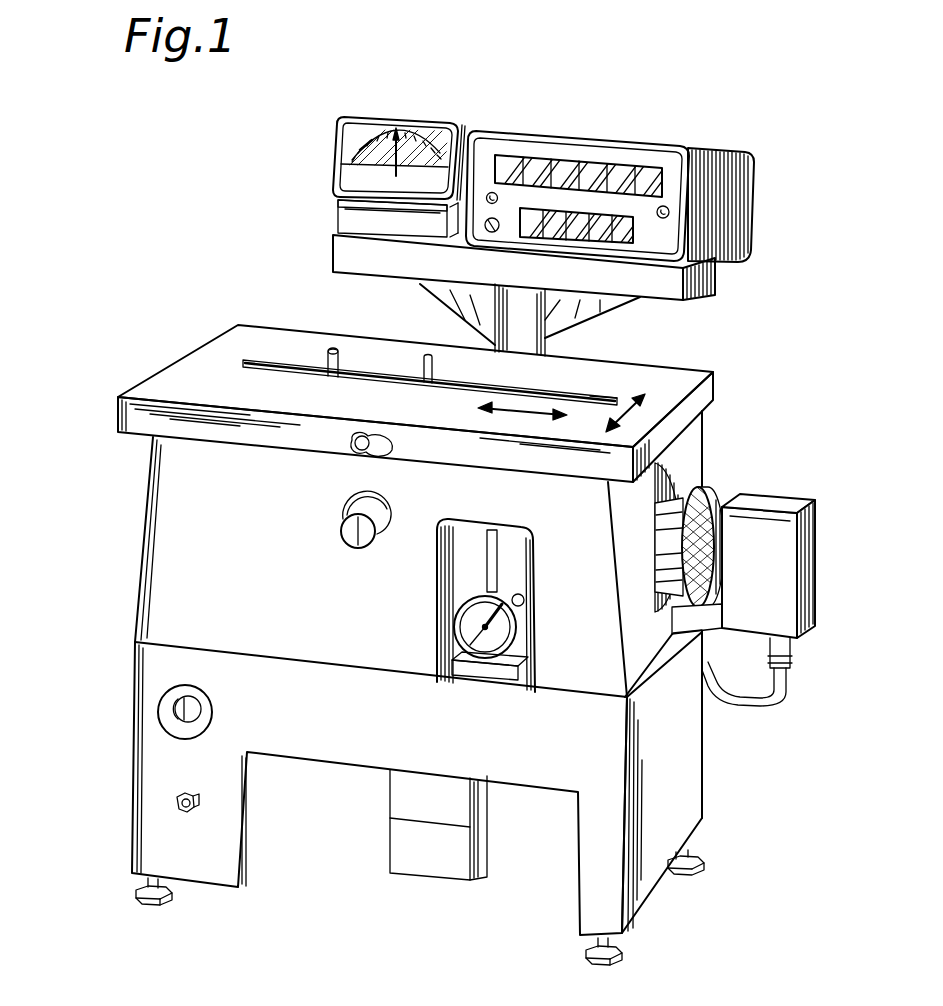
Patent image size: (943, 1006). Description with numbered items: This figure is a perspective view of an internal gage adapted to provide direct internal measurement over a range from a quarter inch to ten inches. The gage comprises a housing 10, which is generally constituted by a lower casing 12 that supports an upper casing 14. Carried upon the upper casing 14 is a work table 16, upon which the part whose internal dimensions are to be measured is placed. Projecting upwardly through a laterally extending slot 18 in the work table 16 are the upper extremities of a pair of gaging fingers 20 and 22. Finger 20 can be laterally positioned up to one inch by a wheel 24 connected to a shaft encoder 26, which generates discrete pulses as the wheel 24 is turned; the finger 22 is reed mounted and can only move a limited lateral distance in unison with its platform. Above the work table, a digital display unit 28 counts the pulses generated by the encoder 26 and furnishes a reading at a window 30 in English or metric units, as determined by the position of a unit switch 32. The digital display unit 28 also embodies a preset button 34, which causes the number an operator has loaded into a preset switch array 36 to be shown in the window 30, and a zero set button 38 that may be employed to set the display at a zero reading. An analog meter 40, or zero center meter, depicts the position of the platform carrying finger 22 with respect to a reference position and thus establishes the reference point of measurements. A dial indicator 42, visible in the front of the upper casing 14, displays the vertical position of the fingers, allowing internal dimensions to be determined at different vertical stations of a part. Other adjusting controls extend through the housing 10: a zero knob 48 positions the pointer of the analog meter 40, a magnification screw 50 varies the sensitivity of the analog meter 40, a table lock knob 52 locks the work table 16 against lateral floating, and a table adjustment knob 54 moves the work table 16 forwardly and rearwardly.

The housing 10 is at (100, 748).
The lower casing 12 is at (385, 718).
The upper casing 14 is at (176, 556).
The work table 16 is at (210, 356).
The slot 18 is at (596, 400).
The gaging finger 20 is at (322, 342).
The gaging finger 22 is at (430, 382).
The wheel 24 is at (717, 490).
The shaft encoder 26 is at (770, 507).
The digital display unit 28 is at (742, 186).
The window 30 is at (635, 172).
The unit switch 32 is at (491, 233).
The preset button 34 is at (492, 191).
The preset switch array 36 is at (632, 246).
The zero set button 38 is at (666, 206).
The analog meter 40 is at (345, 160).
The dial indicator 42 is at (472, 620).
The zero knob 48 is at (172, 712).
The magnification screw 50 is at (178, 808).
The table lock knob 52 is at (362, 455).
The table adjustment knob 54 is at (350, 540).